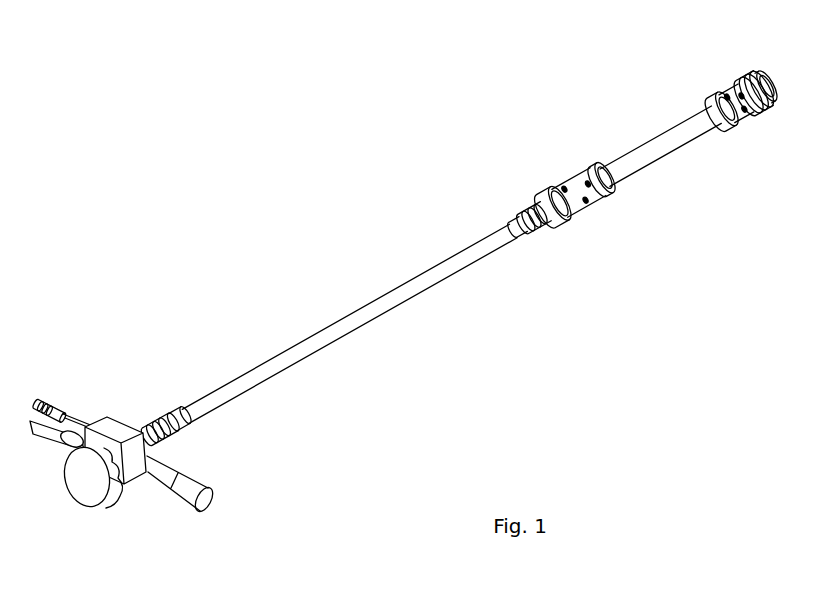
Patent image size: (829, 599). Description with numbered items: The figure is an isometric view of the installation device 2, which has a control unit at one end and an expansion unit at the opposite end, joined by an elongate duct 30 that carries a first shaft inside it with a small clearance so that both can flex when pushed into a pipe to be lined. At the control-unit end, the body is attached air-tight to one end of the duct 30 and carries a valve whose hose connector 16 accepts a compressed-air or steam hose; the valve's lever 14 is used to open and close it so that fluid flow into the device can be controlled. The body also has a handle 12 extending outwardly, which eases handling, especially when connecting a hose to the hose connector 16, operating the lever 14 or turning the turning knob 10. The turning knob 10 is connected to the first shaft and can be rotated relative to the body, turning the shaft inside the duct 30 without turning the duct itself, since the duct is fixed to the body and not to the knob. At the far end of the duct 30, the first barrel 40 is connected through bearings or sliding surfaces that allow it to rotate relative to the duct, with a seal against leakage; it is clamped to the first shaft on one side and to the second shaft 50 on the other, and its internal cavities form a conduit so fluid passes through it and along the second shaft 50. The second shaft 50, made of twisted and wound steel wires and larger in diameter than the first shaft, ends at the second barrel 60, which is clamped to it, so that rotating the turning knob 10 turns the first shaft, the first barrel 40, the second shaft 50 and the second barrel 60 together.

The installation device 2 is at (310, 159).
The turning knob 10 is at (110, 510).
The handle 12 is at (220, 510).
The lever 14 is at (29, 443).
The hose connector 16 is at (42, 400).
The duct 30 is at (378, 318).
The first barrel 40 is at (572, 223).
The second shaft 50 is at (653, 161).
The second barrel 60 is at (707, 95).